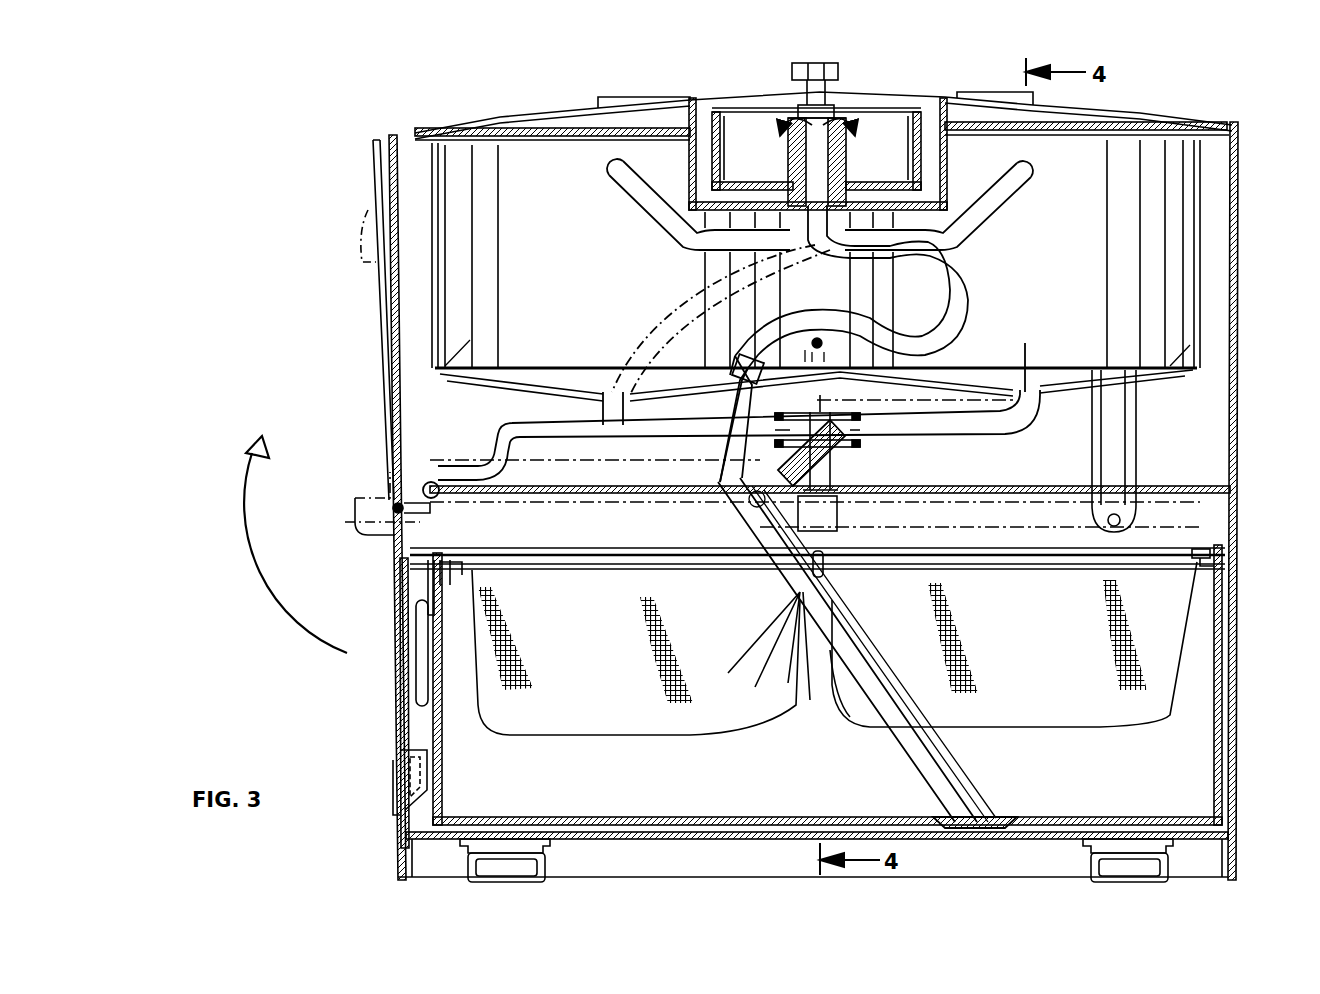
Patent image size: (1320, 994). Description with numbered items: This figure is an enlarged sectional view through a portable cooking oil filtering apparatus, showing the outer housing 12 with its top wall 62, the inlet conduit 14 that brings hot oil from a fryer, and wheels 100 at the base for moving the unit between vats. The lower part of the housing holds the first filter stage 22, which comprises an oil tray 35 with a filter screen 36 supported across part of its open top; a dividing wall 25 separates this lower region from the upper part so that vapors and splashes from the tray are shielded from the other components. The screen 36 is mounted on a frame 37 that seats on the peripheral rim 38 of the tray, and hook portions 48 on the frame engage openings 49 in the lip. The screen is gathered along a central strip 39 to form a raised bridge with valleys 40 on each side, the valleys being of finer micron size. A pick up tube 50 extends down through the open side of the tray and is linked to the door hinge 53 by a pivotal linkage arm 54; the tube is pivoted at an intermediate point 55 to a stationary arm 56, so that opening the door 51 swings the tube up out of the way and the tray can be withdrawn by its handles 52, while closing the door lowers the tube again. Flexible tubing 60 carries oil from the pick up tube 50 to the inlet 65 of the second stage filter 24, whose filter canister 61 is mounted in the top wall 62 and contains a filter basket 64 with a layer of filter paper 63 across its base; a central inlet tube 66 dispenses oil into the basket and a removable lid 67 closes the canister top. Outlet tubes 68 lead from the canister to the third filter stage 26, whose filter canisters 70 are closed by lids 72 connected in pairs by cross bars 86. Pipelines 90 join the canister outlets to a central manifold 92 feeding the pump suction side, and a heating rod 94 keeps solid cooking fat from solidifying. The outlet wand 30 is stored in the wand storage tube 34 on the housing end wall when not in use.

The outer housing 12 is at (1238, 300).
The inlet conduit 14 is at (840, 515).
The first filter stage 22 is at (1190, 707).
The second stage filter 24 is at (713, 92).
The dividing wall 25 is at (902, 486).
The third filter stage 26 is at (422, 332).
The outlet wand 30 is at (1125, 520).
The wand storage tube 34 is at (1138, 452).
The oil tray 35 is at (425, 725).
The filter screen 36 is at (680, 740).
The frame 37 is at (1210, 549).
The peripheral rim 38 is at (1200, 560).
The strip 39 is at (833, 573).
The valleys 40 is at (580, 735).
The hook portions 48 is at (436, 610).
The openings 49 is at (446, 560).
The pick up tube 50 is at (778, 590).
The door 51 is at (378, 290).
The handles 52 is at (415, 675).
The door hinge 53 is at (396, 512).
The linkage arm 54 is at (525, 428).
The pivot point 55 is at (750, 504).
The stationary arm 56 is at (832, 458).
The flexible tubing 60 is at (615, 332).
The filter canister 61 is at (948, 178).
The top wall 62 is at (1060, 130).
The filter paper 63 is at (712, 170).
The filter basket 64 is at (735, 178).
The inlet 65 is at (790, 162).
The central inlet tube 66 is at (848, 148).
The lid 67 is at (838, 98).
The outlet tubes 68 is at (615, 182).
The filter canisters 70 is at (462, 368).
The lid 72 is at (535, 118).
The cross bars 86 is at (615, 98).
The pipelines 90 is at (602, 406).
The manifold 92 is at (800, 420).
The heating rod 94 is at (822, 352).
The wheels 100 is at (548, 868).